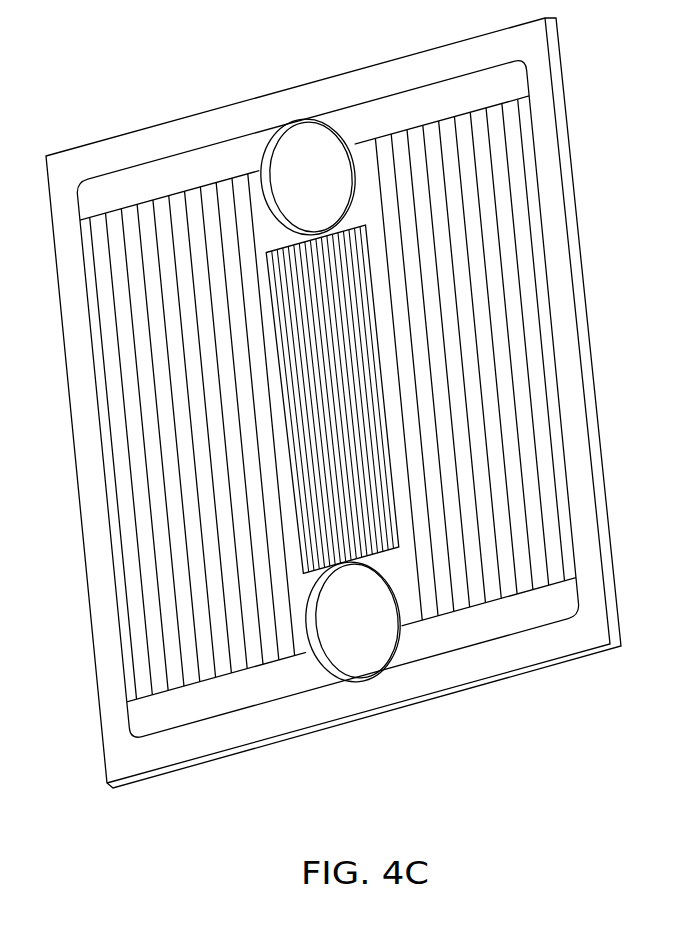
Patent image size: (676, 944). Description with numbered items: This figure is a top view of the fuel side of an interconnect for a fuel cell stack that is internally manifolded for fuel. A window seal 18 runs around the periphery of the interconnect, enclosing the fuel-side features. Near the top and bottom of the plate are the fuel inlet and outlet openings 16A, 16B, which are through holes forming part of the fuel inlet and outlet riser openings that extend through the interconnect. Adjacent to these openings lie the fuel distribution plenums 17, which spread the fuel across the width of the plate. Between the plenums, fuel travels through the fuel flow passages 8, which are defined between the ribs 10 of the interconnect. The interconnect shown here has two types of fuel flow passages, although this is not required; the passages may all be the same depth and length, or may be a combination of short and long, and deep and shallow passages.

The ribs 10 is at (495, 308).
The fuel flow passages 8 is at (372, 535).
The fuel inlet opening 16A is at (310, 162).
The fuel outlet opening 16B is at (358, 653).
The fuel distribution plenums 17 is at (153, 180).
The window seal 18 is at (583, 503).